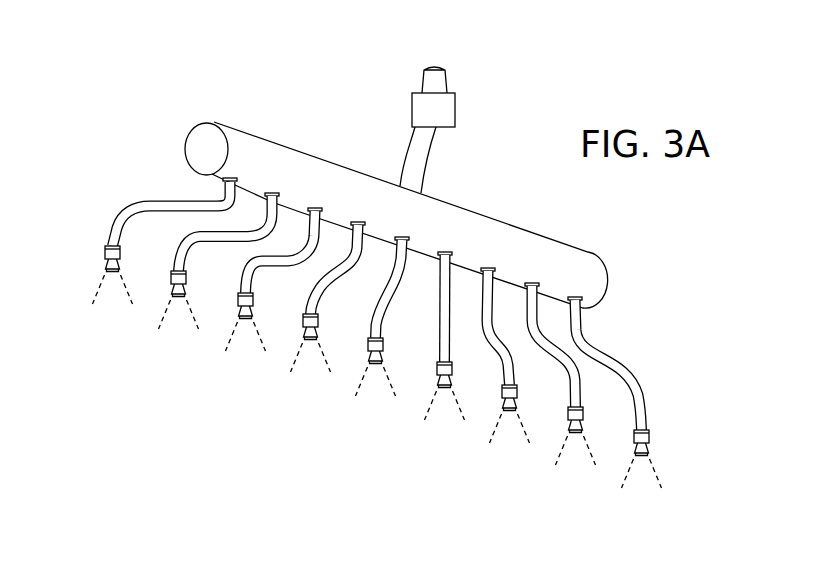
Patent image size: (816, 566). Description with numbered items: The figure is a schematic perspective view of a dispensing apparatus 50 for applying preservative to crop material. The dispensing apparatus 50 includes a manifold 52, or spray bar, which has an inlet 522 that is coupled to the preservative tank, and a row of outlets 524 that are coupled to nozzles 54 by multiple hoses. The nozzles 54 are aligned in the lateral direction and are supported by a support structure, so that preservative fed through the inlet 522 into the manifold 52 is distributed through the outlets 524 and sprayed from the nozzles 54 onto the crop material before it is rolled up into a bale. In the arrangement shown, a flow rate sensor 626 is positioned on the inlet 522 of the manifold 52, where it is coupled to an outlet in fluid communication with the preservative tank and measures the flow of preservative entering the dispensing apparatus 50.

The dispensing apparatus 50 is at (155, 37).
The manifold 52 is at (252, 143).
The inlet 522 is at (398, 182).
The outlets 524 is at (262, 226).
The nozzles 54 is at (303, 322).
The flow rate sensor 626 is at (434, 108).